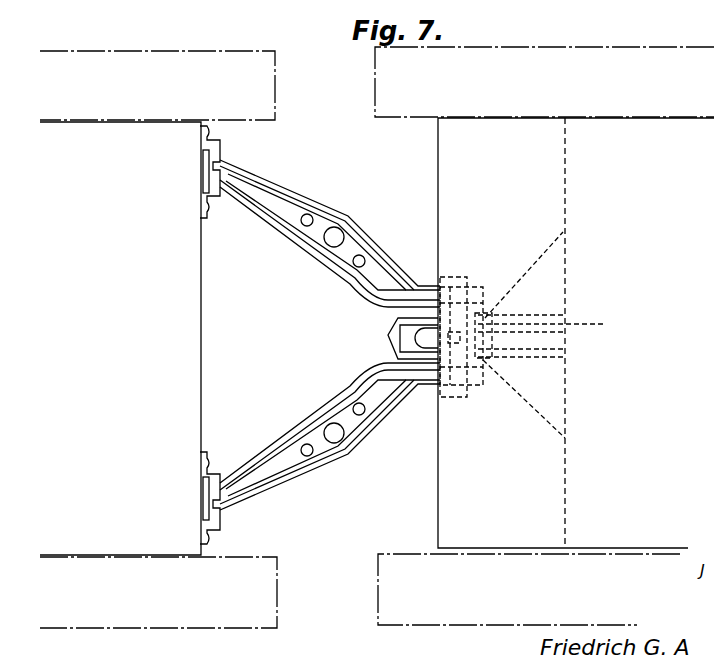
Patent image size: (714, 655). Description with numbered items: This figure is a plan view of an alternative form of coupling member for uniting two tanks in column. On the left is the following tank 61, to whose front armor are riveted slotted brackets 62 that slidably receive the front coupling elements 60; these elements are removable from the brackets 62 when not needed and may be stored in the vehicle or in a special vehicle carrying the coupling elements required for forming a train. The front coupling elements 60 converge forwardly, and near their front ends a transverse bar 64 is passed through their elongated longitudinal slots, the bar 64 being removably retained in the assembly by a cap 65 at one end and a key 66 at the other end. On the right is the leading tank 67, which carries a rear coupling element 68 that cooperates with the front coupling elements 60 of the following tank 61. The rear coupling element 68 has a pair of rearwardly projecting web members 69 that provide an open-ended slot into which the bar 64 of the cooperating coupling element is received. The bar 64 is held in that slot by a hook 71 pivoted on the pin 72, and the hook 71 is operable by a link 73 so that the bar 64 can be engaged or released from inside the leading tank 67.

The front coupling elements 60 is at (297, 195).
The following tank 61 is at (153, 628).
The slotted brackets 62 is at (224, 150).
The transverse bar 64 is at (471, 288).
The cap 65 is at (456, 277).
The key 66 is at (472, 391).
The leading tank 67 is at (394, 629).
The rear coupling element 68 is at (531, 405).
The web members 69 is at (393, 328).
The hook 71 is at (422, 338).
The pin 72 is at (500, 317).
The link 73 is at (599, 323).